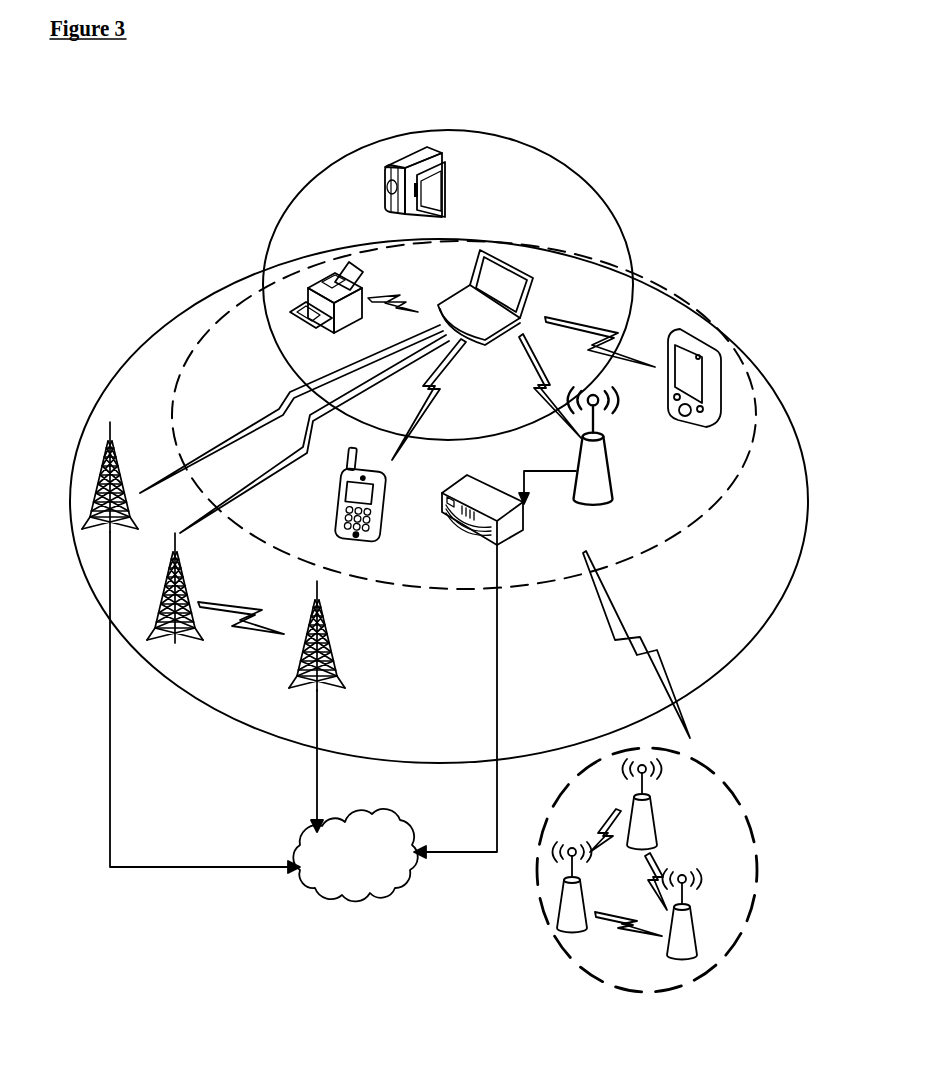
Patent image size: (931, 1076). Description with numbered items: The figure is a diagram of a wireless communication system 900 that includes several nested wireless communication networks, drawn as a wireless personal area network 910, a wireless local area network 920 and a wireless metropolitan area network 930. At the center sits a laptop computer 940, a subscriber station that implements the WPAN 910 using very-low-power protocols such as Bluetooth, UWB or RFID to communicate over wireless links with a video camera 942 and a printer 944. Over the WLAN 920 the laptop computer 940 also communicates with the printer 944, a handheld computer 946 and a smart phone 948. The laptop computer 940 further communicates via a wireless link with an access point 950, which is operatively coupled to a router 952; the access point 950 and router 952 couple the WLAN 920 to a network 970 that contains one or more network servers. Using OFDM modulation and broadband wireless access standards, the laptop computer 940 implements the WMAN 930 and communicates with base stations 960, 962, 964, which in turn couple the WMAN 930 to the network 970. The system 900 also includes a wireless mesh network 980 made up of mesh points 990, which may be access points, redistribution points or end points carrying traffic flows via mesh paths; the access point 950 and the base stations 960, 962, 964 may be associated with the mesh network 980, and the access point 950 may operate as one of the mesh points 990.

The wireless communication system 900 is at (658, 158).
The wireless personal area network (WPAN) 910 is at (262, 260).
The wireless local area network (WLAN) 920 is at (210, 331).
The wireless metropolitan area network (WMAN) 930 is at (145, 341).
The laptop computer 940 is at (490, 265).
The video camera 942 is at (445, 186).
The printer 944 is at (350, 323).
The handheld computer 946 is at (700, 424).
The smart phone 948 is at (378, 540).
The access point (AP) 950 is at (610, 500).
The router 952 is at (505, 542).
The base station 960 is at (112, 432).
The base station 962 is at (185, 602).
The base station 964 is at (334, 670).
The network 970 is at (408, 832).
The wireless mesh network 980 is at (731, 792).
The mesh points (MPs) 990 is at (681, 846).